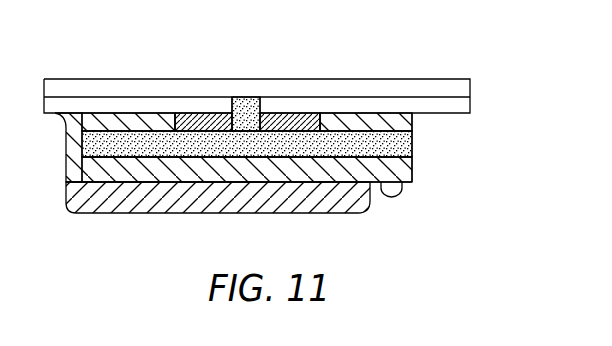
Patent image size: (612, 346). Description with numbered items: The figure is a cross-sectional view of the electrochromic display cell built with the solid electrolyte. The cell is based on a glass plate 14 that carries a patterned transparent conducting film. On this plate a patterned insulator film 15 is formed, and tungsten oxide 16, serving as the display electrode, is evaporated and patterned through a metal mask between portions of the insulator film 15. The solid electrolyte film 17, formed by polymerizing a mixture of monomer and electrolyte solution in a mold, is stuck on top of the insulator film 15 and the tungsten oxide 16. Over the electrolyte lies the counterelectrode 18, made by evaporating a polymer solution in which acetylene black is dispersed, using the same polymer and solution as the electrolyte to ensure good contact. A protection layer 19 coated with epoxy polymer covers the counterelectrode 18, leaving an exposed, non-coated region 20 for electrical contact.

The glass plate 14 is at (465, 104).
The insulator film 15 is at (135, 122).
The tungsten oxide 16 is at (289, 122).
The solid electrolyte film 17 is at (403, 146).
The counterelectrode 18 is at (405, 172).
The protection layer 19 is at (78, 204).
The exposed region 20 is at (394, 191).